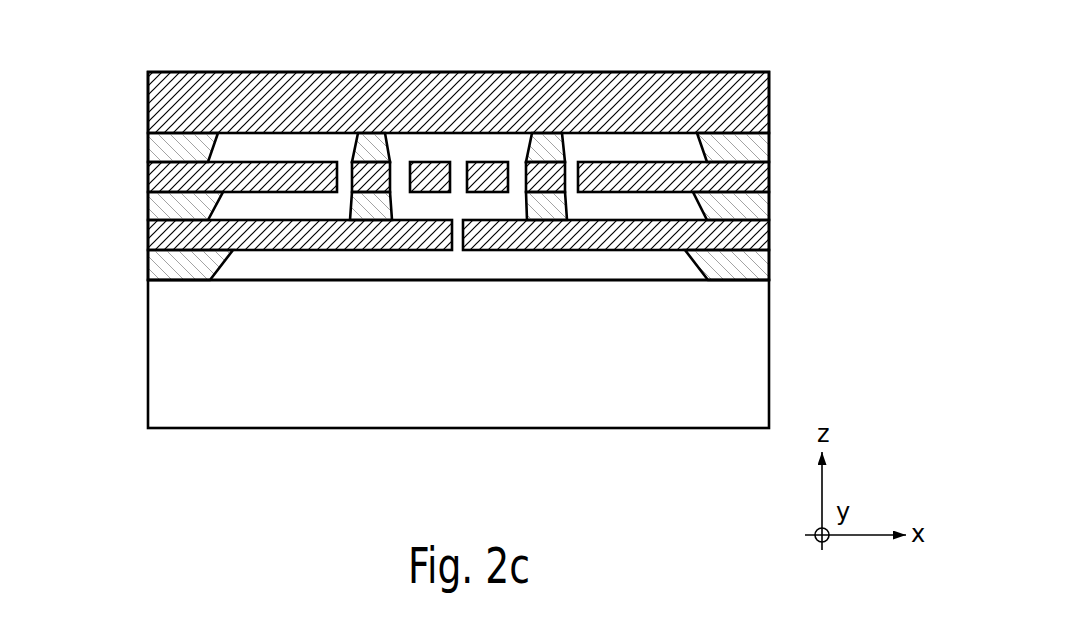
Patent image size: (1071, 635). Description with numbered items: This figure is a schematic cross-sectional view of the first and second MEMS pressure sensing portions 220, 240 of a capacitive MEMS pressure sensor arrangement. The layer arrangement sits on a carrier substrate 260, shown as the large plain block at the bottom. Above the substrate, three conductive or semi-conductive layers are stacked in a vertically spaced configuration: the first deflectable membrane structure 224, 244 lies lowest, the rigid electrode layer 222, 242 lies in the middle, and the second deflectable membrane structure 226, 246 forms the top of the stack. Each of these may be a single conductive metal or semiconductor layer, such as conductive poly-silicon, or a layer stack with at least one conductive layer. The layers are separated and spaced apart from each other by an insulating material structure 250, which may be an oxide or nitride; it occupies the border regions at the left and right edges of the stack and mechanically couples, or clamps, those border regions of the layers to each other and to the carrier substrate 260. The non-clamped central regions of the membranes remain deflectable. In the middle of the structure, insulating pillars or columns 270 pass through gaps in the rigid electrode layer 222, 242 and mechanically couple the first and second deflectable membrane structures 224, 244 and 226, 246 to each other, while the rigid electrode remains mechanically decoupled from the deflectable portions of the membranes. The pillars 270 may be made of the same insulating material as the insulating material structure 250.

The first MEMS pressure sensing portion 220 is at (485, 151).
The second MEMS pressure sensing portion 240 is at (485, 151).
The second deflectable membrane structure 226 is at (543, 102).
The second deflectable membrane structure 246 is at (778, 103).
The rigid electrode layer 222 is at (543, 175).
The rigid electrode layer 242 is at (778, 177).
The first deflectable membrane structure 224 is at (543, 235).
The first deflectable membrane structure 244 is at (778, 237).
The insulating material structure 250 is at (142, 147).
The insulating pillar or column 270 is at (527, 143).
The carrier substrate 260 is at (778, 353).